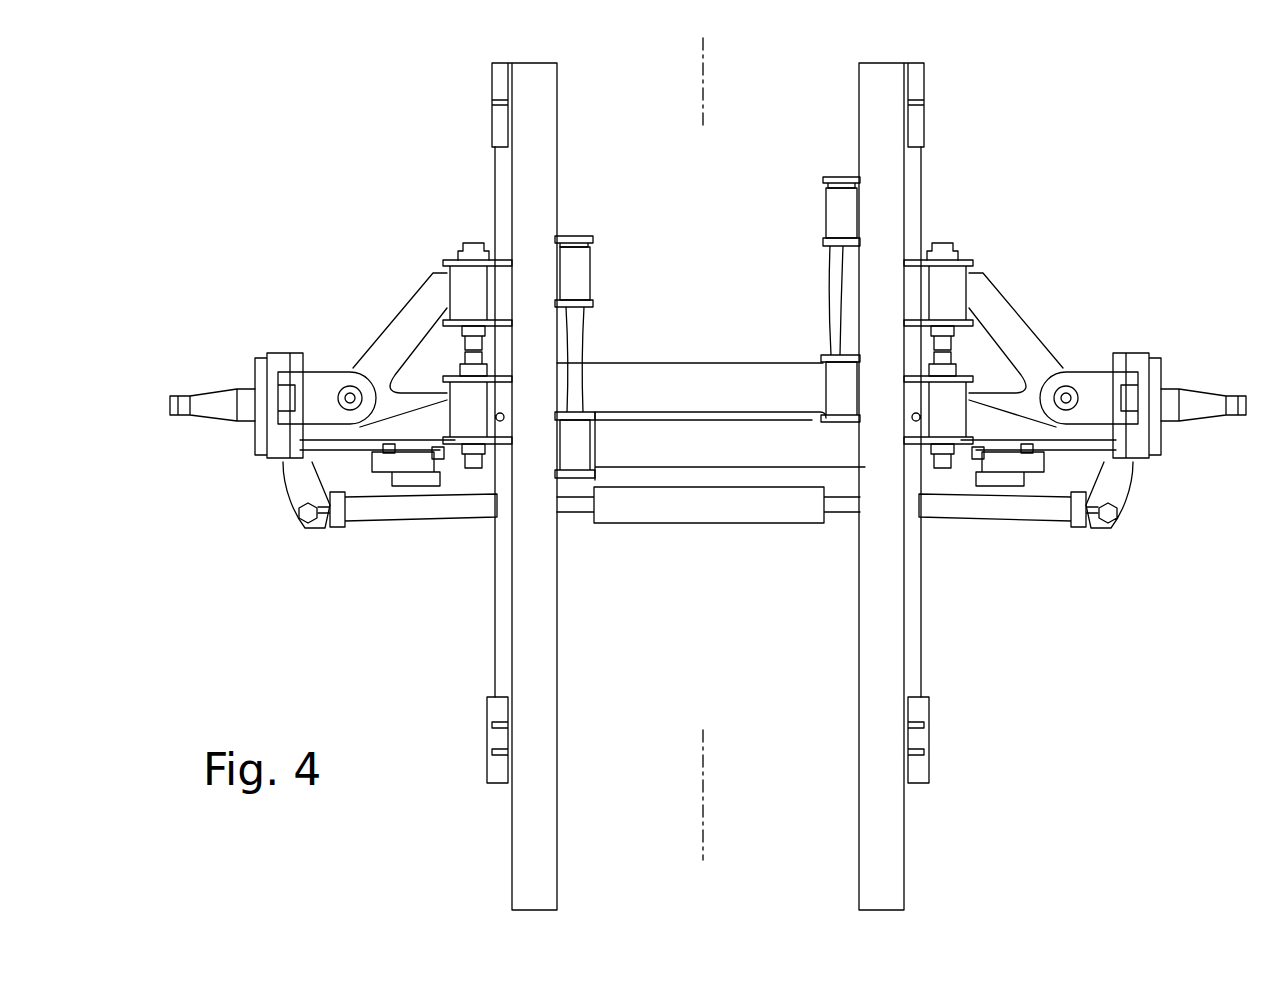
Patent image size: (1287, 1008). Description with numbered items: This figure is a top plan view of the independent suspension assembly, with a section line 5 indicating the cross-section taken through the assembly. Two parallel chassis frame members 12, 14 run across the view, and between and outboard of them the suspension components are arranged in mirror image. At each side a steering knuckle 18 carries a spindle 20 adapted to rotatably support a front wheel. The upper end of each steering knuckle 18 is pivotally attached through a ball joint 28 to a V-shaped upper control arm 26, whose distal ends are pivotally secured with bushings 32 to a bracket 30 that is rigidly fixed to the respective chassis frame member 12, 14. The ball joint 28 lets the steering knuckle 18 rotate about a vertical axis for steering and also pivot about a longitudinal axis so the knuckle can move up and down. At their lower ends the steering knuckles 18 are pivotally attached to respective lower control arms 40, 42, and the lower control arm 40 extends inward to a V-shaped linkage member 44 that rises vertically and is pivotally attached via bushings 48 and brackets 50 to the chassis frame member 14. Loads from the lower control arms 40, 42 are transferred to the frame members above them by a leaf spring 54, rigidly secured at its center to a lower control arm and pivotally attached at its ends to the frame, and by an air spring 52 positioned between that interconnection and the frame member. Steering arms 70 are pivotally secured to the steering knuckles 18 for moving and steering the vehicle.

The section line 5- 5 is at (703, 860).
The chassis frame member 12 is at (527, 672).
The chassis frame member 14 is at (875, 688).
The steering knuckle 18 is at (1165, 358).
The spindle 20 is at (1195, 405).
The upper control arm 26 is at (1000, 325).
The ball joint 28 is at (1075, 392).
The bracket 30 is at (922, 245).
The bushing 32 is at (970, 472).
The lower control arm 40 is at (480, 478).
The lower control arm 42 is at (1082, 505).
The V-shaped linkage member 44 is at (830, 300).
The bushing 48 is at (828, 380).
The bracket 50 is at (845, 175).
The air spring 52 is at (935, 478).
The leaf spring 54 is at (917, 655).
The steering arm 70 is at (1030, 515).